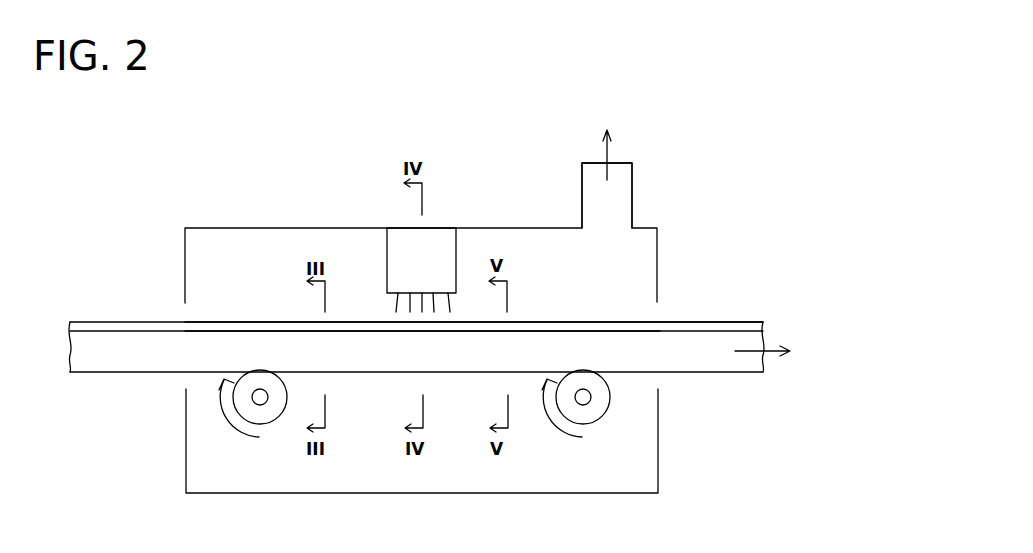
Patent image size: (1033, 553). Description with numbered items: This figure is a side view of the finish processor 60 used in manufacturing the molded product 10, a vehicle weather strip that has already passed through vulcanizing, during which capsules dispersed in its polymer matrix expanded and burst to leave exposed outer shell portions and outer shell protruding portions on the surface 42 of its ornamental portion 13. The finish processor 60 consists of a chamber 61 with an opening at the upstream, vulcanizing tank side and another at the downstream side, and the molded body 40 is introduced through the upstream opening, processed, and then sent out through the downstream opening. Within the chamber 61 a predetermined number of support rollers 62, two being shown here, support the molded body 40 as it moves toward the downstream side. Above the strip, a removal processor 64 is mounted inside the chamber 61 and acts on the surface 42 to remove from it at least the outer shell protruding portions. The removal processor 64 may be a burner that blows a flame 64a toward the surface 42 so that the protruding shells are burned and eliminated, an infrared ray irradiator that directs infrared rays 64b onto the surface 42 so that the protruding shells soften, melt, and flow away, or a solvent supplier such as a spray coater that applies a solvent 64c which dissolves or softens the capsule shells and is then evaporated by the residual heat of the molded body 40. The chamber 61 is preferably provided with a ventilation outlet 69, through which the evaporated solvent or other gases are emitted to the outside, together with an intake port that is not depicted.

The molded product 10 is at (429, 363).
The ornamental portion 13 is at (740, 320).
The molded body 40 is at (122, 383).
The surface 42 is at (228, 322).
The finish processor 60 is at (437, 292).
The chamber 61 is at (236, 228).
The support rollers 62 is at (268, 420).
The removal processor 64 is at (447, 236).
The flame 64a is at (450, 303).
The infrared rays 64b is at (501, 173).
The solvent 64c is at (502, 172).
The ventilation outlet 69 is at (630, 200).